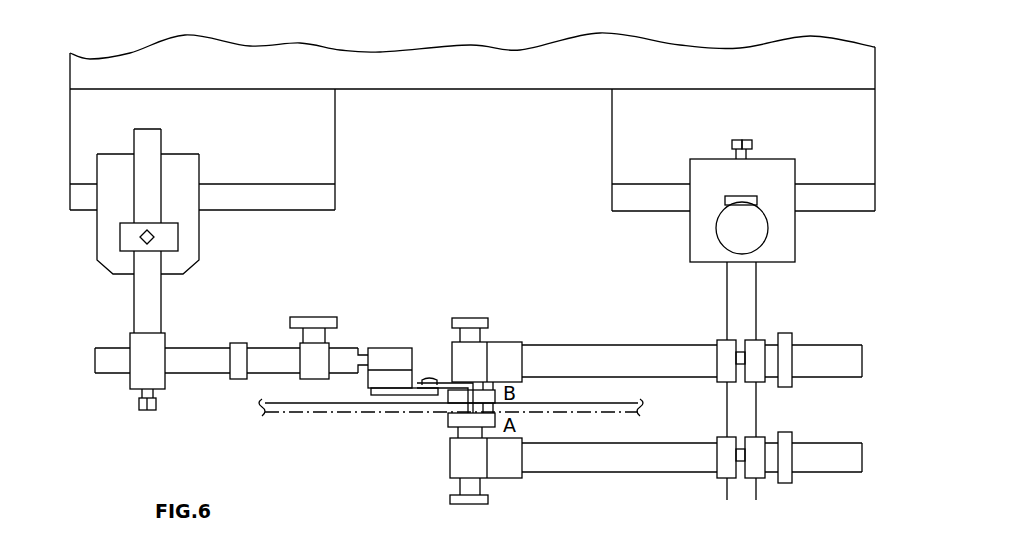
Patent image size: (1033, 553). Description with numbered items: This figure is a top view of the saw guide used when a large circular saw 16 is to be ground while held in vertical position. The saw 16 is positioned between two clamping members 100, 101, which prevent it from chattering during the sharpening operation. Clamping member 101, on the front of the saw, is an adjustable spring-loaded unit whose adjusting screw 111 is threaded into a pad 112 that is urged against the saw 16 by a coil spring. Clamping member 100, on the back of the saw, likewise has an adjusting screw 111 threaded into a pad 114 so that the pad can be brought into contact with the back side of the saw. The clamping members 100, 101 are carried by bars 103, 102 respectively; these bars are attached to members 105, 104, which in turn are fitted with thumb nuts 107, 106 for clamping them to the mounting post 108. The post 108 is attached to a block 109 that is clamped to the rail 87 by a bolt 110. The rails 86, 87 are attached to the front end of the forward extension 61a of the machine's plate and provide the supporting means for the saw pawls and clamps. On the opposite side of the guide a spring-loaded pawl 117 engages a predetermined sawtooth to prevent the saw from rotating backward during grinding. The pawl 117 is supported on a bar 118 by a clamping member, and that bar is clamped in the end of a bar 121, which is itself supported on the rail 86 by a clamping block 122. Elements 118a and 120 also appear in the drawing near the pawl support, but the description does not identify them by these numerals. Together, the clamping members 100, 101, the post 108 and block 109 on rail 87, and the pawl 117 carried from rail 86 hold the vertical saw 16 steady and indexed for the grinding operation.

The circular saw 16 is at (378, 414).
The forward extension 61a is at (532, 82).
The rail 86 is at (283, 203).
The rail 87 is at (617, 195).
The clamping member 100 is at (482, 352).
The clamping member 101 is at (460, 468).
The bar 102 is at (660, 465).
The bar 103 is at (620, 356).
The member 104 is at (757, 468).
The member 105 is at (762, 344).
The thumb nut 106 is at (790, 438).
The thumb nut 107 is at (790, 338).
The mounting post 108 is at (731, 297).
The block 109 is at (790, 252).
The bolt 110 is at (752, 146).
The adjusting screw 111 is at (452, 322).
The pad 112 is at (450, 418).
The pad 114 is at (490, 398).
The spring loaded pawl 117 is at (383, 350).
The bar 118 is at (205, 355).
The valve 118a is at (141, 304).
The valve 120 is at (333, 324).
The bar 121 is at (124, 243).
The clamping block 122 is at (197, 240).